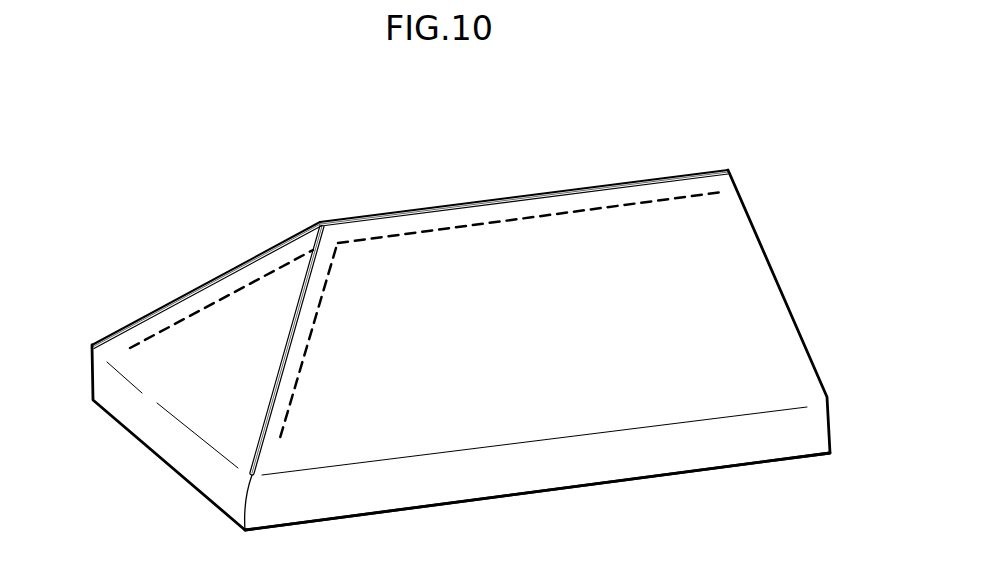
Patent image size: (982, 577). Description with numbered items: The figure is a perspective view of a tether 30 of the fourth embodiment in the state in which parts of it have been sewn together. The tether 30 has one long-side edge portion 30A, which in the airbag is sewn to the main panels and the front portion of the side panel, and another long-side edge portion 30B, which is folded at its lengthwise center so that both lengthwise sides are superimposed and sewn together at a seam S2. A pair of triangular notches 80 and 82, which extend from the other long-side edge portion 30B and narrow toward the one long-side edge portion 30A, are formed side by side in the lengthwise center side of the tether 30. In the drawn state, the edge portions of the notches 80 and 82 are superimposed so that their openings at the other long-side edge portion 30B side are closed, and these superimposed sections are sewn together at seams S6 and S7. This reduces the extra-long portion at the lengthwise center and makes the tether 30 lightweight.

The tether 30 is at (377, 208).
The one long-side edge portion 30A is at (638, 477).
The other long-side edge portion 30B is at (500, 197).
The triangular notch 80 is at (265, 425).
The triangular notch 82 is at (272, 250).
The seam S2 is at (655, 198).
The seam S6 is at (315, 332).
The seam S7 is at (190, 317).